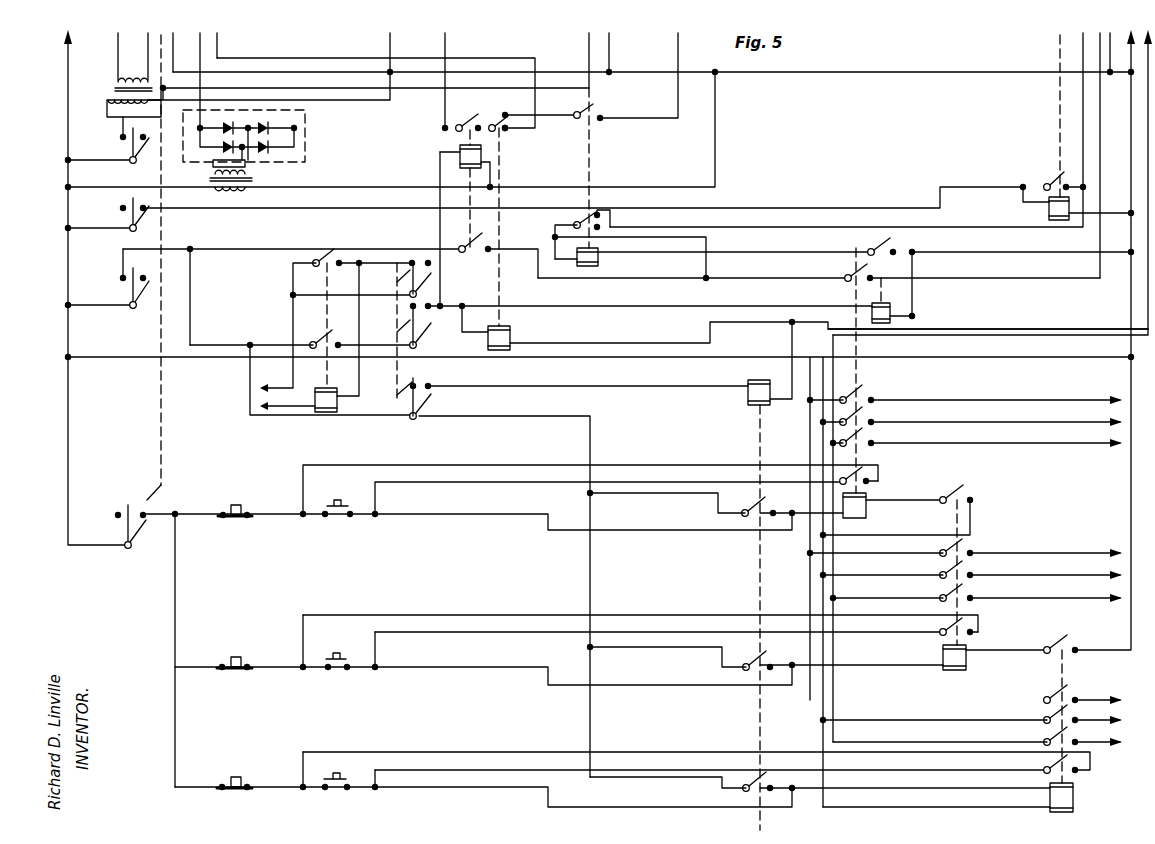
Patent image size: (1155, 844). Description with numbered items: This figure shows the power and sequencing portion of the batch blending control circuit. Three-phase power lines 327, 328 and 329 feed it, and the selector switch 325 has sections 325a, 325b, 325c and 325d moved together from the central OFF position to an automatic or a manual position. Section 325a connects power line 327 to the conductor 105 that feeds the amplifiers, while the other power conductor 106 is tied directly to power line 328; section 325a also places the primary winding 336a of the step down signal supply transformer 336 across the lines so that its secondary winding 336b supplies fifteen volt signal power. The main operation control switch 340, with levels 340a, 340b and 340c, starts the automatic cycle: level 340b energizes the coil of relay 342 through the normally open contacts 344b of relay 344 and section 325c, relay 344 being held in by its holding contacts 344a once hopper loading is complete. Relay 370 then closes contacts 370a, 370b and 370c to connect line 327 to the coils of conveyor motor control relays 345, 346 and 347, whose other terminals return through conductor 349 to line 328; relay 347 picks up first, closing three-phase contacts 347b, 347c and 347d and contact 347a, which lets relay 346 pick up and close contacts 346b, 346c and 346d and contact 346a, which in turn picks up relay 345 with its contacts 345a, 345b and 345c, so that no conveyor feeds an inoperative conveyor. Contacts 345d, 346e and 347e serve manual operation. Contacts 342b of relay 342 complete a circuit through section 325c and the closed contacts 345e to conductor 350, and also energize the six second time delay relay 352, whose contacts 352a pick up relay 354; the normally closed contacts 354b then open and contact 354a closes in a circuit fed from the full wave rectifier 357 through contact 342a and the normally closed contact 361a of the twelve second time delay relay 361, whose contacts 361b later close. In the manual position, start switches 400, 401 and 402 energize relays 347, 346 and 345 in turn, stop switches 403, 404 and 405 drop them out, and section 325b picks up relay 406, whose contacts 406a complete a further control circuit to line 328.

The conductor 105 is at (152, 40).
The A.C. power conductor 106 is at (176, 58).
The A.C. power line 327 is at (66, 90).
The step down signal supply transformer 336 is at (104, 96).
The primary winding 336a is at (106, 108).
The secondary winding 336b is at (118, 82).
The selector switch 325 is at (158, 452).
The switch section 325a is at (126, 146).
The switch section 325b is at (126, 210).
The switch section 325c is at (126, 284).
The switch section 325d is at (128, 504).
The full wave rectifier 357 is at (290, 124).
The relay 342 is at (484, 158).
The normally open contact 342a is at (485, 108).
The normally open contacts 342b is at (480, 246).
The time delay relay 361 is at (505, 353).
The normally closed contact 361a is at (510, 114).
The normally open contacts 361b is at (508, 129).
The relay 354 is at (602, 259).
The contact 354a is at (597, 110).
The normally closed contacts 354b is at (600, 213).
The relay 344 is at (326, 414).
The normally open holding contacts 344a is at (325, 258).
The normally open contacts 344b is at (338, 336).
The main operation control switch 340 is at (400, 365).
The switching level 340a is at (420, 282).
The switching level 340b is at (419, 328).
The switching level 340c is at (420, 398).
The relay 370 is at (750, 382).
The normally open relay contact 370a is at (766, 504).
The normally open relay contact 370b is at (766, 657).
The normally open relay contact 370c is at (766, 780).
The A.C. power line 328 is at (1131, 125).
The power line 329 is at (1148, 293).
The conductor 350 is at (988, 313).
The conductor 349 is at (950, 358).
The relay 406 is at (1049, 212).
The contacts 406a is at (1070, 184).
The time delay relay 352 is at (895, 311).
The normally open contacts 352a is at (888, 250).
The conveyor motor control relay 345 is at (843, 513).
The normally open contact 345a is at (882, 382).
The normally open contact 345b is at (872, 420).
The normally open contact 345c is at (873, 442).
The normally open contact 345d is at (880, 471).
The relay contacts 345e is at (872, 277).
The conveyor motor control relay 346 is at (950, 662).
The normally open contacts 346a is at (968, 490).
The normally open contact 346b is at (964, 525).
The normally open contact 346c is at (972, 548).
The normally open contact 346d is at (975, 570).
The normally open contact 346e is at (975, 621).
The conveyor motor control relay 347 is at (1075, 806).
The normally open contact 347a is at (1092, 629).
The normally open contact 347b is at (1092, 683).
The normally open contact 347c is at (1074, 716).
The normally open contact 347d is at (1074, 738).
The normally open contact 347e is at (1077, 768).
The starting switch 400 is at (348, 780).
The start switch 401 is at (347, 660).
The start switch 402 is at (350, 518).
The stop switch 403 is at (257, 768).
The stop switch 404 is at (237, 662).
The stop switch 405 is at (237, 510).